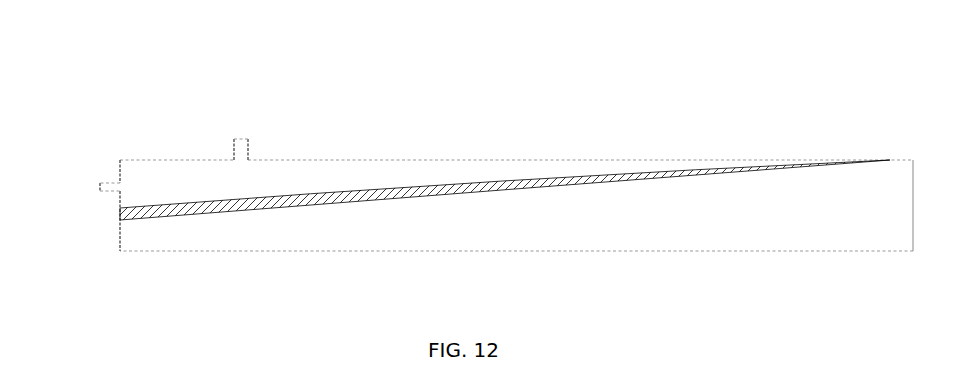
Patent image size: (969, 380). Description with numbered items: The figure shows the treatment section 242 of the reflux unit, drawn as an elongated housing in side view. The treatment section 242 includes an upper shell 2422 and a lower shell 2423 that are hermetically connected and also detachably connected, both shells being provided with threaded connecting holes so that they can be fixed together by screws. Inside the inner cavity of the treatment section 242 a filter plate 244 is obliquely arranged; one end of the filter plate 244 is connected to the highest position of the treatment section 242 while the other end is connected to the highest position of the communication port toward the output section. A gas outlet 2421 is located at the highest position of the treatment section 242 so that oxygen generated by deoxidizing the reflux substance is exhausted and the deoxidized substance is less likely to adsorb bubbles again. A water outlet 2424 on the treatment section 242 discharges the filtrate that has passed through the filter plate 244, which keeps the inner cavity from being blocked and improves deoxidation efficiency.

The treatment section 242 is at (548, 49).
The gas outlet 2421 is at (244, 128).
The upper shell 2422 is at (593, 171).
The lower shell 2423 is at (573, 202).
The water outlet 2424 is at (96, 170).
The filter plate 244 is at (390, 200).